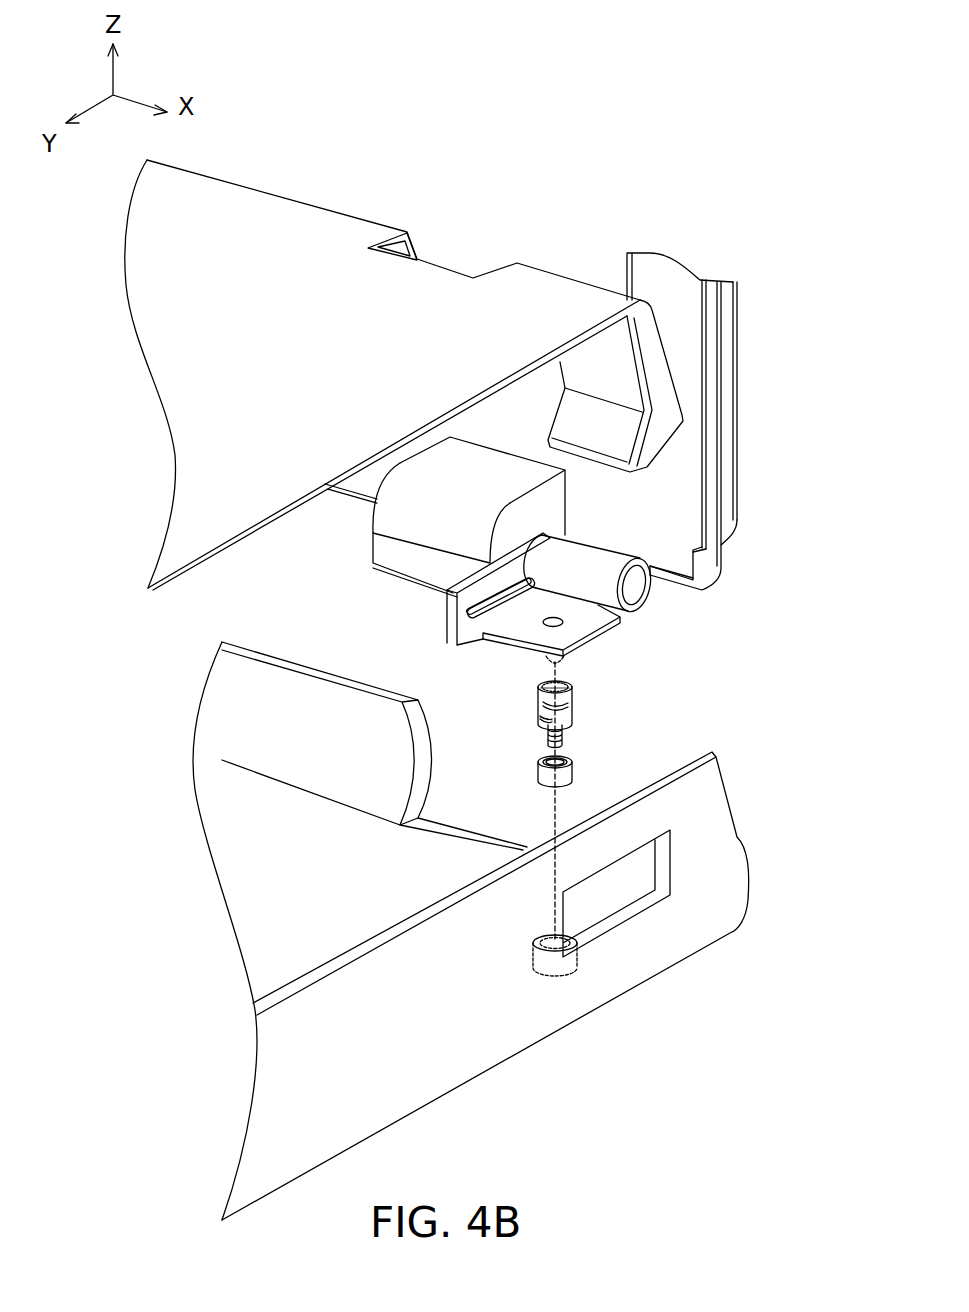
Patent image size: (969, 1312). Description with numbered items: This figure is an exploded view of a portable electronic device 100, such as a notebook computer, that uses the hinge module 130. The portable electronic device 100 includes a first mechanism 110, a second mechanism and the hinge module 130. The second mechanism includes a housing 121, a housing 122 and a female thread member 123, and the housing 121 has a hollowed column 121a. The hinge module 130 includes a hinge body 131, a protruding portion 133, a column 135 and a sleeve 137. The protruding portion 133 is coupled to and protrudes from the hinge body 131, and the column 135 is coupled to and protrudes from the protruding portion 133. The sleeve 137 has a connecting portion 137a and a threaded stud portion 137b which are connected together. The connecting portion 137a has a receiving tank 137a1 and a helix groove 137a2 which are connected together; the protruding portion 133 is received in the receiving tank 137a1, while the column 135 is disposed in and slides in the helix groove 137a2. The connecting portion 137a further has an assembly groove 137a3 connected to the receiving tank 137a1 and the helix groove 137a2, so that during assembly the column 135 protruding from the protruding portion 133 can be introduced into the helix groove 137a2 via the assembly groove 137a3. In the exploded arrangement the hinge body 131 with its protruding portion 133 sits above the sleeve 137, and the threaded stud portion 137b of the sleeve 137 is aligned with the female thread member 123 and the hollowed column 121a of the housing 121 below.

The portable electronic device 100 is at (850, 42).
The first mechanism 110 is at (727, 426).
The housing 121 is at (507, 931).
The hollowed column 121a is at (568, 972).
The housing 122 is at (240, 533).
The female thread member 123 is at (550, 783).
The hinge module 130 is at (573, 554).
The hinge body 131 is at (637, 590).
The protruding portion 133 is at (567, 663).
The column 135 is at (545, 660).
The sleeve 137 is at (597, 719).
The connecting portion 137a is at (567, 717).
The receiving tank 137a1 is at (542, 680).
The helix groove 137a2 is at (532, 721).
The assembly groove 137a3 is at (534, 716).
The threaded stud portion 137b is at (567, 732).